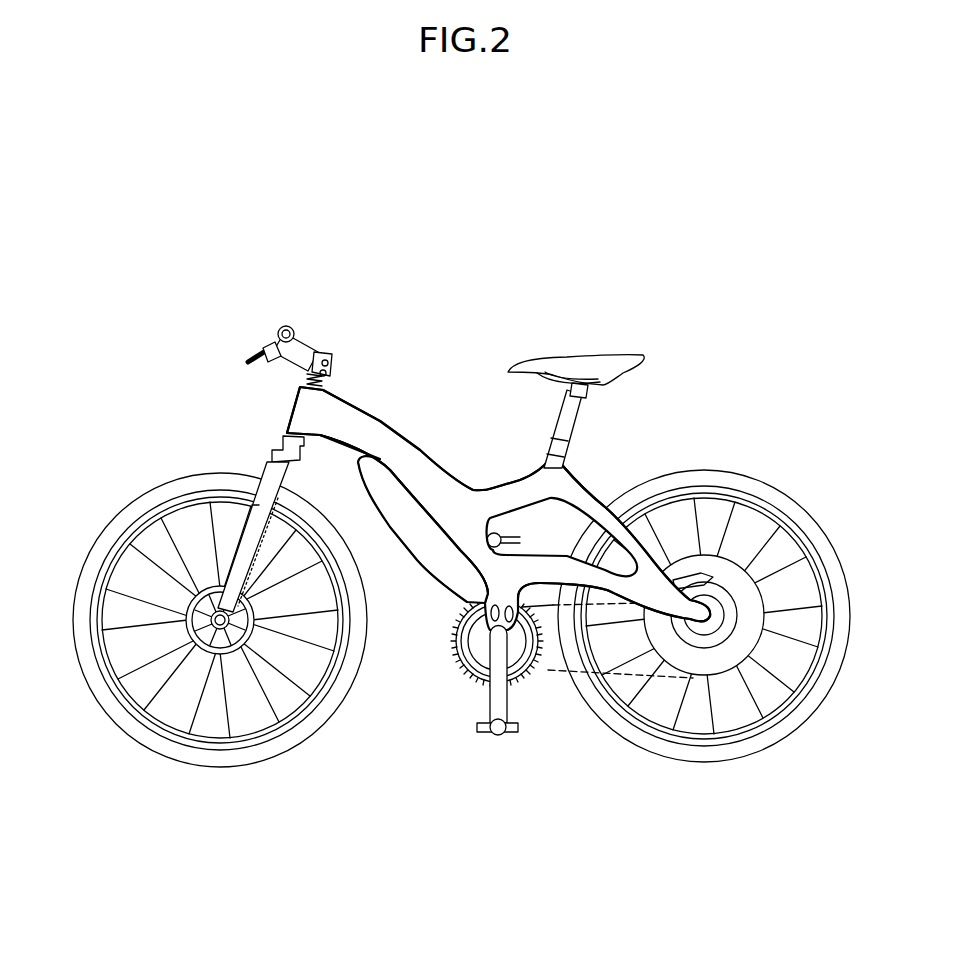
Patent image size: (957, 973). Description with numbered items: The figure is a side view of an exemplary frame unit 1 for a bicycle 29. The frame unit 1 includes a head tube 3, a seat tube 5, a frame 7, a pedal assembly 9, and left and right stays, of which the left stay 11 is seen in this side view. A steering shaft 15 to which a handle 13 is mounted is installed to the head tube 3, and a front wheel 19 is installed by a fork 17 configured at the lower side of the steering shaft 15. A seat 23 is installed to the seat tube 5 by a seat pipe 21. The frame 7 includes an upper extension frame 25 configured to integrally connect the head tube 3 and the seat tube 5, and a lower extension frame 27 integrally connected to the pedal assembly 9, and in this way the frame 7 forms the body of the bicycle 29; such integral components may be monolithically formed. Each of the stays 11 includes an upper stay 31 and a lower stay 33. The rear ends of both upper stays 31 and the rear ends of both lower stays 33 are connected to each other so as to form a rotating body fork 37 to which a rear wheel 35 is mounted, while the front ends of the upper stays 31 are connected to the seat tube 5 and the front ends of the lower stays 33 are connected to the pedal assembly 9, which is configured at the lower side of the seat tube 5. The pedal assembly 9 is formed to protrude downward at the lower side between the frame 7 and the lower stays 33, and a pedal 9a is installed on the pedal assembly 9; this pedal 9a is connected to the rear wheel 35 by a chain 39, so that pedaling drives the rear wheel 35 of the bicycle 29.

The frame unit 1 is at (452, 385).
The head tube 3 is at (300, 415).
The seat tube 5 is at (543, 463).
The frame 7 is at (388, 420).
The pedal assembly 9 is at (463, 642).
The pedal 9a is at (483, 732).
The left stay 11 is at (597, 491).
The handle 13 is at (306, 352).
The steering shaft 15 is at (300, 384).
The fork 17 is at (245, 545).
The front wheel 19 is at (170, 752).
The seat pipe 21 is at (550, 440).
The seat 23 is at (596, 362).
The upper extension frame 25 is at (503, 497).
The lower extension frame 27 is at (480, 548).
The bicycle 29 is at (738, 412).
The upper stay 31 is at (580, 478).
The lower stay 33 is at (612, 612).
The rear wheel 35 is at (780, 746).
The rotating body fork 37 is at (705, 613).
The chain 39 is at (670, 680).